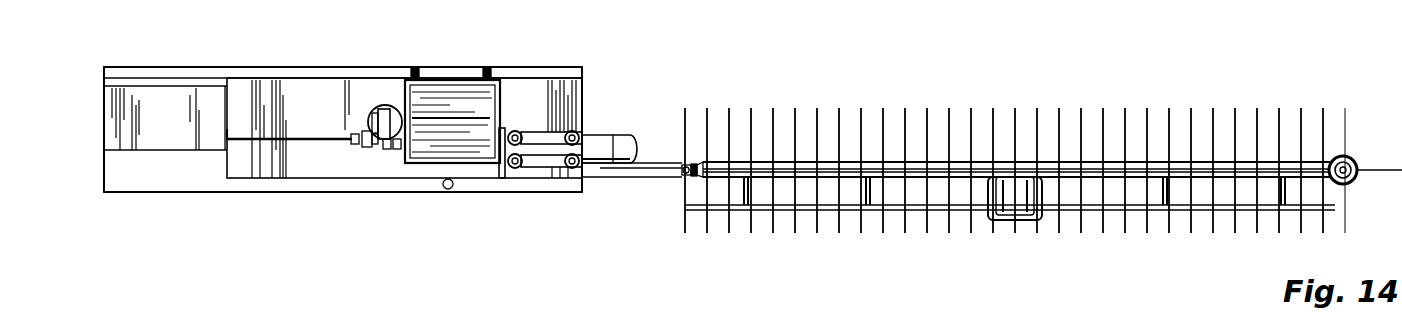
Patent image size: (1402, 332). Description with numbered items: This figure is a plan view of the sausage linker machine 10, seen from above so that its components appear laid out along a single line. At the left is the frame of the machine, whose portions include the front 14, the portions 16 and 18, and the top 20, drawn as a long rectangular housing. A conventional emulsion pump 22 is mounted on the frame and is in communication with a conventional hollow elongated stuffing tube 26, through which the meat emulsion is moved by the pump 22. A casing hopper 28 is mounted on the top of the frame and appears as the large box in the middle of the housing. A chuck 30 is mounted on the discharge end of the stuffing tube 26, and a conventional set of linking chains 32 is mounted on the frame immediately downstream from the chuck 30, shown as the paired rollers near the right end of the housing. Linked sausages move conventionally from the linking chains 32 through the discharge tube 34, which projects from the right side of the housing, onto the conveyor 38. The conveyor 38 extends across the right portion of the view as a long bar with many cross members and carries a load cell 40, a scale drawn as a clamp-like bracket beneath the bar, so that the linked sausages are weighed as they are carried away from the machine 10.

The sausage linker machine 10 is at (365, 46).
The front 14 is at (248, 141).
The frame portion 16 is at (148, 76).
The frame portion 18 is at (583, 70).
The top 20 is at (96, 78).
The emulsion pump 22 is at (373, 106).
The stuffing tube 26 is at (287, 193).
The casing hopper 28 is at (461, 79).
The chuck 30 is at (508, 127).
The linking chains 32 is at (542, 161).
The discharge tube 34 is at (600, 146).
The conveyor 38 is at (1082, 172).
The load cell 40 is at (1024, 218).